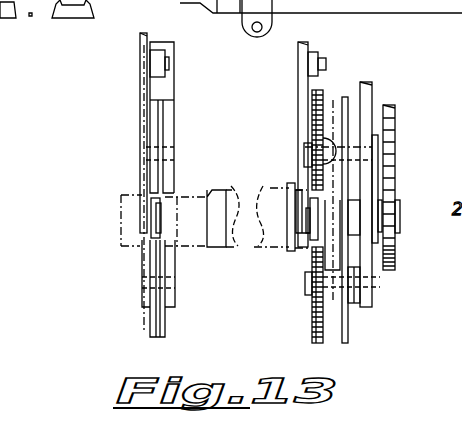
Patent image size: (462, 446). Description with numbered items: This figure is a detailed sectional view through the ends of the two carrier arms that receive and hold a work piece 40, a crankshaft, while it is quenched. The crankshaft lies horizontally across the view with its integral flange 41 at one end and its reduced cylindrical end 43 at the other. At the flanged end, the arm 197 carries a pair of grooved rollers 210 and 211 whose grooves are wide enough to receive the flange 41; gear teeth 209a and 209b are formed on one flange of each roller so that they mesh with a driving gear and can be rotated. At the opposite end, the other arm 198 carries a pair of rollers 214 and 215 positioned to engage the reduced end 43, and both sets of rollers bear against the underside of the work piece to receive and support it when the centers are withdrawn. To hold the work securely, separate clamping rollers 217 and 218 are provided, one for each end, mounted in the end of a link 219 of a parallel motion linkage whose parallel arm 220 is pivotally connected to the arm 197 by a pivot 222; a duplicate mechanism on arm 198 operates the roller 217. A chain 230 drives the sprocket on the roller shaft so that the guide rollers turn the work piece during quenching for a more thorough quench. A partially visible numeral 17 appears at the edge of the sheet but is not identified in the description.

The arm 198 is at (165, 87).
The roller 214 is at (168, 105).
The clamping roller 217 is at (152, 238).
The roller 215 is at (161, 329).
The reduced end 43 is at (122, 197).
The work piece 40 is at (223, 190).
The pivot 222 is at (340, 44).
The link 219 is at (299, 86).
The gear teeth 209a is at (313, 98).
The flange 41 is at (310, 144).
The clamping roller 218 is at (312, 237).
The gear teeth 209b is at (312, 298).
The parallel arm 220 is at (333, 104).
The grooved roller 211 is at (336, 333).
The grooved roller 210 is at (369, 84).
The arm 197 is at (373, 92).
The chain 230 is at (393, 121).
The frame 17 is at (447, 305).